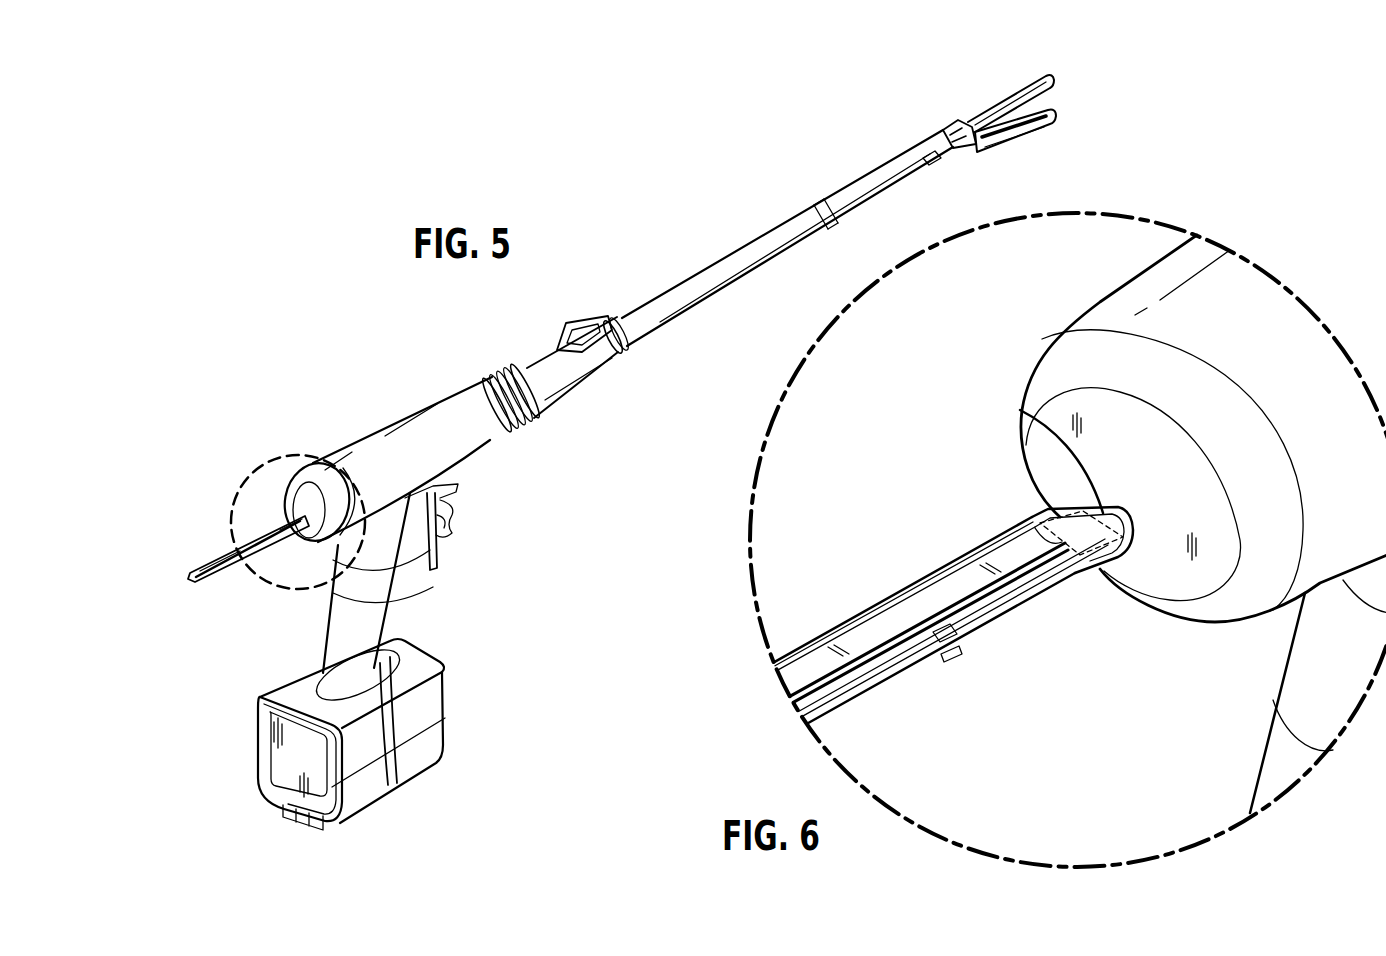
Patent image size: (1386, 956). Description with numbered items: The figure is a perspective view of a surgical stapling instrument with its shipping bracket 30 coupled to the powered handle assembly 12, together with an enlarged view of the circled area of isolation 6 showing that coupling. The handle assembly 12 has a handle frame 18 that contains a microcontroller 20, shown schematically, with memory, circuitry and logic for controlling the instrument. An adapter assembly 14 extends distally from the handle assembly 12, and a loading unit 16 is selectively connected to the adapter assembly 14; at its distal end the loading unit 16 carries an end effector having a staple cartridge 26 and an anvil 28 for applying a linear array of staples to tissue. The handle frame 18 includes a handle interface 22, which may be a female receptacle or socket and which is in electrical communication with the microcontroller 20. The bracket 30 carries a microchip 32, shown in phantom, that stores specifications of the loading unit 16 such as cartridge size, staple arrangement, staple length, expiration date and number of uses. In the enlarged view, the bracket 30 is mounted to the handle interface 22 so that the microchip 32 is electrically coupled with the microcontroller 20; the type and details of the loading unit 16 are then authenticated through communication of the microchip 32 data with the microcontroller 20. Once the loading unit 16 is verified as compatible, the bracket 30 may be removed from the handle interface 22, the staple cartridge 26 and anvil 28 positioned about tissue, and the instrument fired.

In FIG. 5, the area of isolation 6 is at (266, 460).
In FIG. 5, the powered handle assembly 12 is at (379, 398).
In FIG. 5, the adapter assembly 14 is at (660, 275).
In FIG. 5, the loading unit 16 is at (895, 147).
In FIG. 5, the handle frame 18 is at (410, 714).
In FIG. 6, the handle frame 18 is at (1260, 384).
In FIG. 5, the microcontroller 20 is at (293, 757).
In FIG. 6, the handle interface 22 is at (1020, 410).
In FIG. 5, the staple cartridge 26 is at (1032, 128).
In FIG. 5, the anvil 28 is at (1020, 93).
In FIG. 5, the shipping bracket 30 is at (235, 562).
In FIG. 6, the shipping bracket 30 is at (888, 602).
In FIG. 6, the microchip 32 is at (1050, 497).